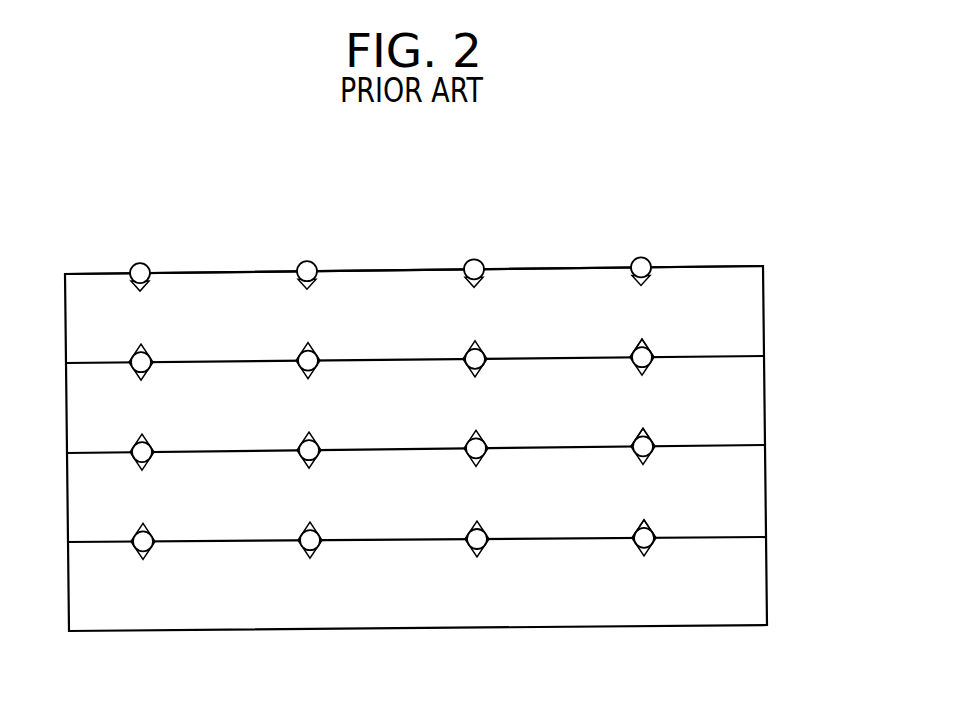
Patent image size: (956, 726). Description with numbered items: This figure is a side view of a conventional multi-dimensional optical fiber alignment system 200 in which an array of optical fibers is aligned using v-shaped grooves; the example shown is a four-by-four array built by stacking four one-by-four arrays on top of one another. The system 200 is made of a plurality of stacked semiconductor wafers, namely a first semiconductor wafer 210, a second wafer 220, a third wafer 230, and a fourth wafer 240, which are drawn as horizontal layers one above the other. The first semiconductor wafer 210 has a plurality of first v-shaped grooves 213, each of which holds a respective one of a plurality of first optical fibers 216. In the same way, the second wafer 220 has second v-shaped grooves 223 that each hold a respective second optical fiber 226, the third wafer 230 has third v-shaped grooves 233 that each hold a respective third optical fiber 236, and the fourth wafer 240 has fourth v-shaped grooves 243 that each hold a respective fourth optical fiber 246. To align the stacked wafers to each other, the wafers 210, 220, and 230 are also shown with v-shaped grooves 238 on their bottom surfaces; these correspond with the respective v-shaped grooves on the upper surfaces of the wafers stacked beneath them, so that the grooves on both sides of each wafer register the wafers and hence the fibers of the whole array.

The multi-dimensional optical fiber alignment system 200 is at (165, 200).
The first semiconductor wafer 210 is at (763, 313).
The second wafer 220 is at (764, 403).
The third wafer 230 is at (765, 496).
The fourth wafer 240 is at (767, 591).
The first v-shaped grooves 213 is at (302, 283).
The first optical fibers 216 is at (314, 265).
The second v-shaped grooves 223 is at (471, 372).
The second optical fibers 226 is at (481, 367).
The third v-shaped grooves 233 is at (306, 462).
The third optical fibers 236 is at (315, 457).
The v-shaped grooves on bottom surfaces 238 is at (646, 345).
The fourth v-shaped grooves 243 is at (140, 552).
The fourth optical fibers 246 is at (150, 546).